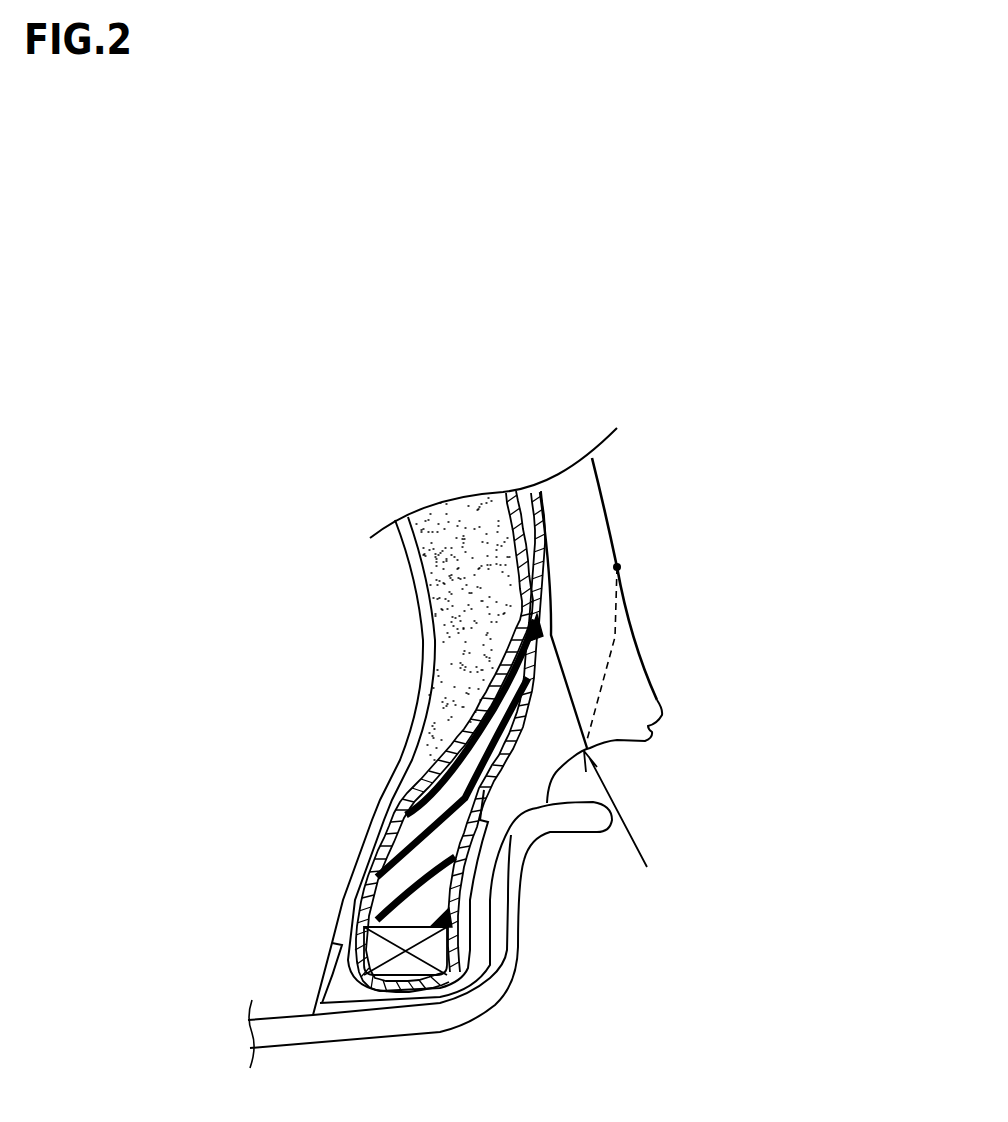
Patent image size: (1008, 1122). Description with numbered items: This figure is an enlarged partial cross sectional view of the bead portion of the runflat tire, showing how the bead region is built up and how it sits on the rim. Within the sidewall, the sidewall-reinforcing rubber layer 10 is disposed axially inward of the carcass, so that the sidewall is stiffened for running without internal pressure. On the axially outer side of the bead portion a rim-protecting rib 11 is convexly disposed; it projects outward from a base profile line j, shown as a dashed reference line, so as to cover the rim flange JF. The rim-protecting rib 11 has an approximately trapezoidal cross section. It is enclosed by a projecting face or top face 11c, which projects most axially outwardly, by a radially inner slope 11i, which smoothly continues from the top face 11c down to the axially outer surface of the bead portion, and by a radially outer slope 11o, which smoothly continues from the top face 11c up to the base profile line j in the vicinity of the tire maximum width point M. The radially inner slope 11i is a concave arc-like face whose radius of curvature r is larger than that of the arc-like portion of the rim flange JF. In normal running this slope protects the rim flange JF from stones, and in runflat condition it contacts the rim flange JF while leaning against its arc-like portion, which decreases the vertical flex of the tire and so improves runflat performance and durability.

The sidewall-reinforcing rubber layer 10 is at (450, 575).
The rim-protecting rib 11 is at (723, 658).
The radially outer slope 11o is at (657, 673).
The radially inner slope 11i is at (603, 748).
The projecting face (top face) 11c is at (655, 727).
The tire maximum width point M is at (617, 567).
The base profile line j is at (615, 637).
The radius of curvature r is at (633, 841).
The rim flange JF is at (510, 860).